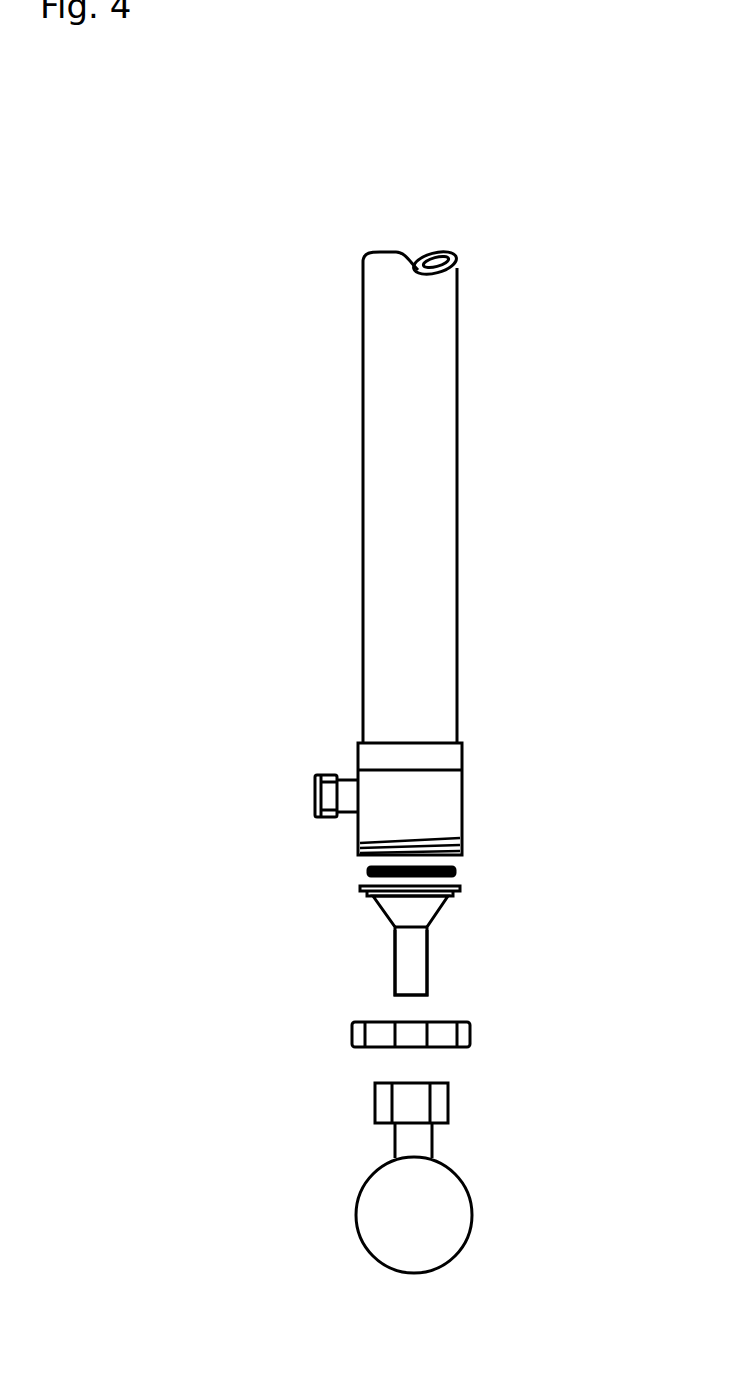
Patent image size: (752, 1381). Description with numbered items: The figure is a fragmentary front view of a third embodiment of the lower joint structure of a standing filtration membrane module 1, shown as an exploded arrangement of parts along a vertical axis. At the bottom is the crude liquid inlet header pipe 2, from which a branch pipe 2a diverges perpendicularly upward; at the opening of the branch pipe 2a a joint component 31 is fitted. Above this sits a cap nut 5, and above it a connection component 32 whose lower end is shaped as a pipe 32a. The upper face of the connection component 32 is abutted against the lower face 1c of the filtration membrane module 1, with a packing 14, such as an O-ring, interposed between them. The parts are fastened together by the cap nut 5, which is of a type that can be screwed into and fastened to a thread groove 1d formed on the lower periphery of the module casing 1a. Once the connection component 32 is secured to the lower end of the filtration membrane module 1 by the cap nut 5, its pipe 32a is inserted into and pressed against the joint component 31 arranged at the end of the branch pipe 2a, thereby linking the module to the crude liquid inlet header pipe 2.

The filtration membrane module 1 is at (462, 470).
The module casing 1a is at (462, 792).
The lower face 1c is at (463, 863).
The thread groove 1d is at (360, 849).
The packing 14 is at (460, 870).
The connection component 32 is at (440, 905).
The pipe 32a is at (427, 968).
The cap nut 5 is at (470, 1033).
The joint component 31 is at (448, 1103).
The branch pipe 2a is at (398, 1142).
The crude liquid inlet header pipe 2 is at (357, 1238).